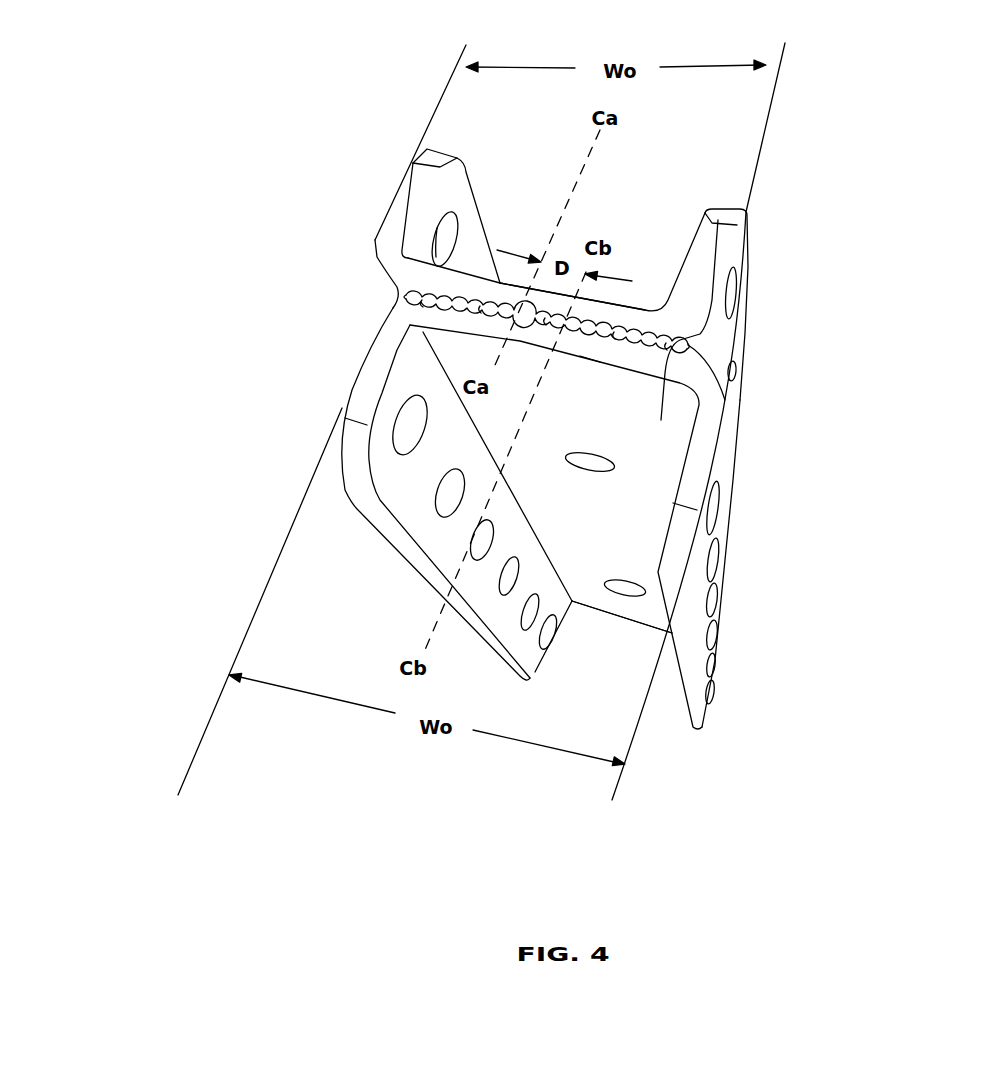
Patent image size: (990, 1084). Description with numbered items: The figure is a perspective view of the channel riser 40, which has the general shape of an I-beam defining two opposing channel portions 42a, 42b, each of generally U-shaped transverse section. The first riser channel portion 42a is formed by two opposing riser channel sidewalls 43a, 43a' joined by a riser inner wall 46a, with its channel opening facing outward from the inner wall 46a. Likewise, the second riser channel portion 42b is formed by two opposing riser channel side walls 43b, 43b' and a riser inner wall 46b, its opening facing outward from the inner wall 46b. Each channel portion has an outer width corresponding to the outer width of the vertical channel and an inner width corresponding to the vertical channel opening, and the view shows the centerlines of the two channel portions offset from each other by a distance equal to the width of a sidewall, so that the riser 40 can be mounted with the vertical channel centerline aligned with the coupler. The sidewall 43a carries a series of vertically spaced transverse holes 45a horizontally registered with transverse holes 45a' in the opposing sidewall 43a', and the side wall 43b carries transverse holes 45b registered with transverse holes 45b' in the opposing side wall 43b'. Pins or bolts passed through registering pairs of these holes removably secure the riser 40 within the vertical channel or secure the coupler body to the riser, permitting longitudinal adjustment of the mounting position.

The channel riser 40 is at (833, 233).
The riser channel portion 42a is at (620, 218).
The riser channel portion 42b is at (613, 673).
The riser channel sidewall 43a is at (370, 228).
The riser channel sidewall 43a' is at (812, 314).
The riser channel side wall 43b is at (374, 494).
The riser channel side wall 43b' is at (780, 563).
The transverse holes 45a is at (475, 207).
The transverse holes 45a' is at (796, 326).
The transverse holes 45b is at (361, 612).
The transverse holes 45b' is at (816, 615).
The riser inner wall 46a is at (647, 311).
The riser inner wall 46b is at (587, 360).